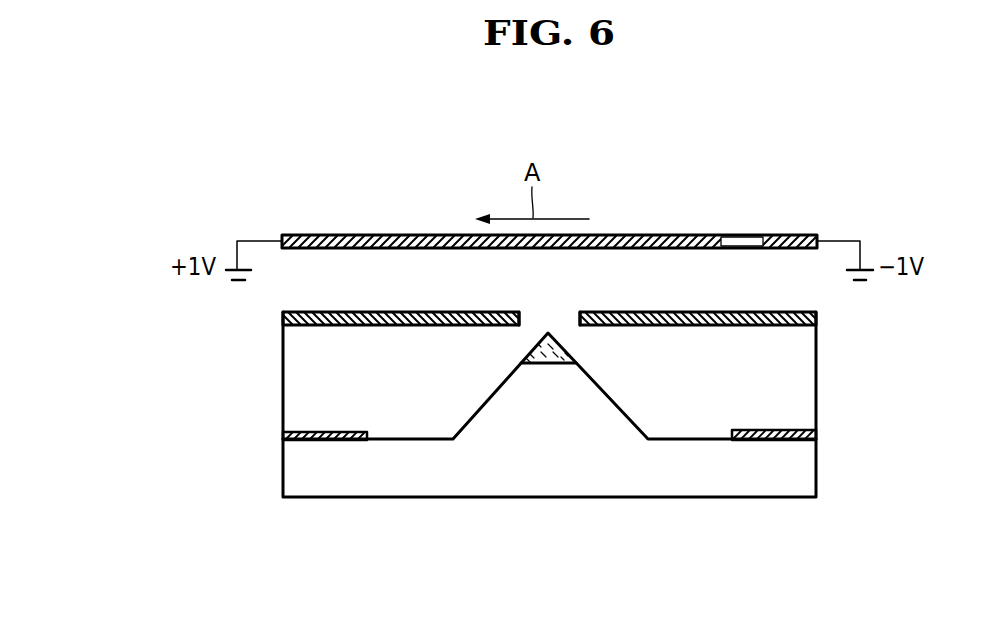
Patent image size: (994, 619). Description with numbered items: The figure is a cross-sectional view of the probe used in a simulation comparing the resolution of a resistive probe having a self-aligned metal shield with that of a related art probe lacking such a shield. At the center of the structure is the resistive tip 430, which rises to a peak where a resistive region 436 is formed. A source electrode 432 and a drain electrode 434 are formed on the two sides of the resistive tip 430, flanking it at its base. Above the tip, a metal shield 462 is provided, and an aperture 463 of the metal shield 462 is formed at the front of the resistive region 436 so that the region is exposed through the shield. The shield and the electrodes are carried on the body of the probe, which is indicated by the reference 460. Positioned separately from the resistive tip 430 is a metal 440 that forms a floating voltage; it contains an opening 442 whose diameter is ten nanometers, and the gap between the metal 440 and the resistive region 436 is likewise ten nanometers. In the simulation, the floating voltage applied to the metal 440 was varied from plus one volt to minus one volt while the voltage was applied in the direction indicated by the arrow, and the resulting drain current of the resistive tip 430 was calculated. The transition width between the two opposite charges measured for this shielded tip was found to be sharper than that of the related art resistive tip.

The resistive tip 430 is at (476, 377).
The source electrode 432 is at (283, 434).
The drain electrode 434 is at (816, 437).
The resistive region 436 is at (548, 358).
The metal 440 is at (697, 235).
The opening 442 is at (749, 235).
The substrate frame 460 is at (803, 375).
The metal shield 462 is at (283, 316).
The aperture 463 is at (573, 319).